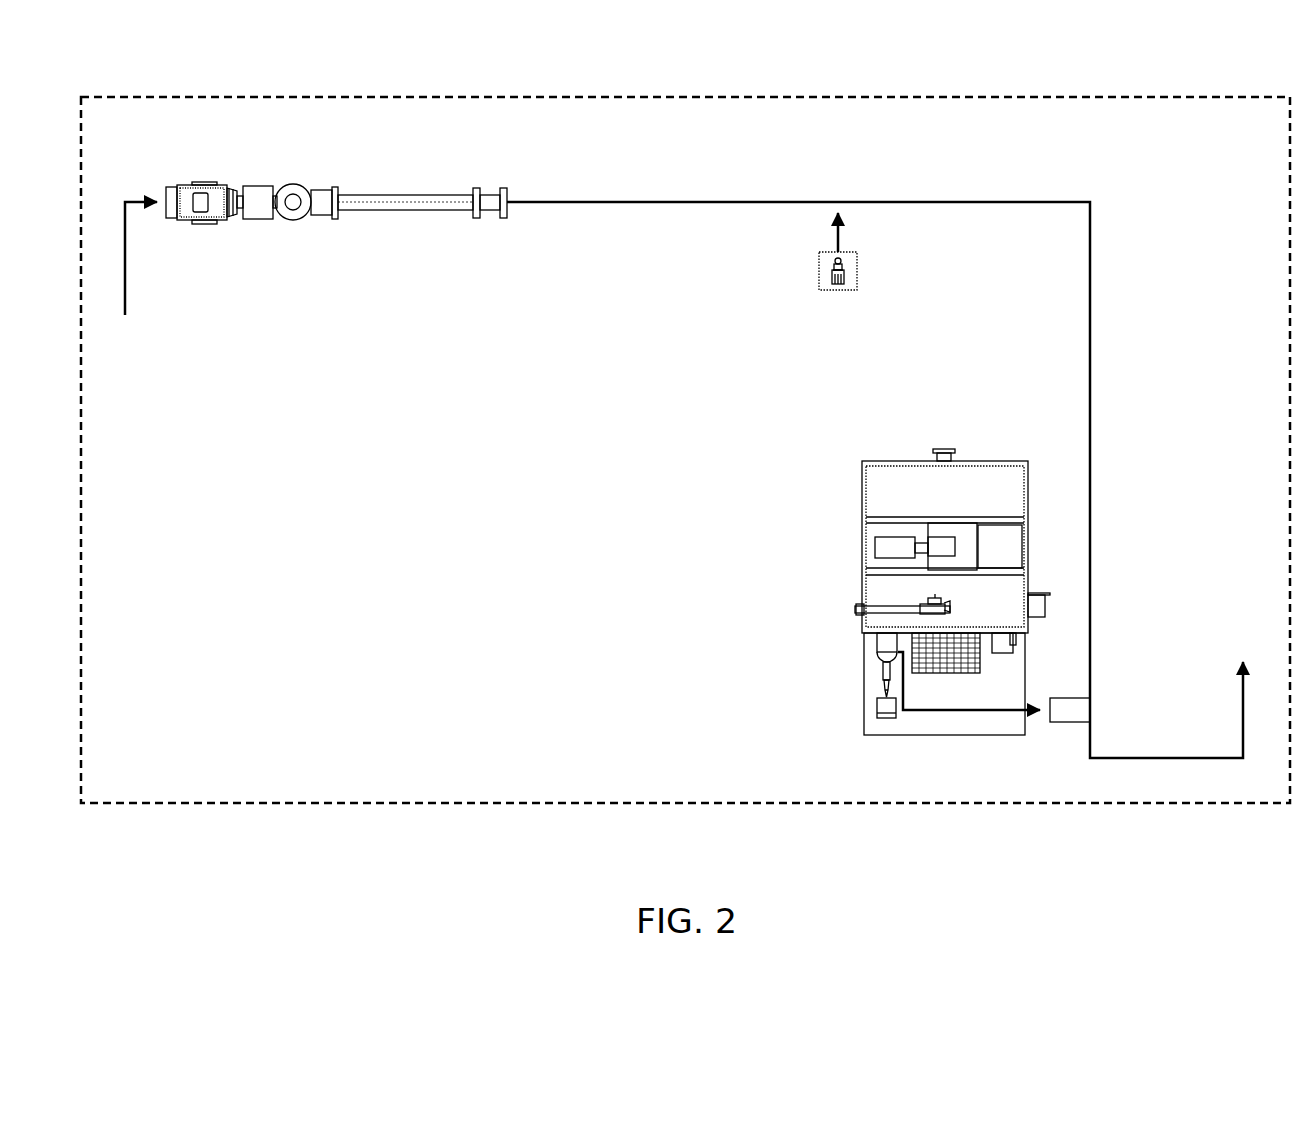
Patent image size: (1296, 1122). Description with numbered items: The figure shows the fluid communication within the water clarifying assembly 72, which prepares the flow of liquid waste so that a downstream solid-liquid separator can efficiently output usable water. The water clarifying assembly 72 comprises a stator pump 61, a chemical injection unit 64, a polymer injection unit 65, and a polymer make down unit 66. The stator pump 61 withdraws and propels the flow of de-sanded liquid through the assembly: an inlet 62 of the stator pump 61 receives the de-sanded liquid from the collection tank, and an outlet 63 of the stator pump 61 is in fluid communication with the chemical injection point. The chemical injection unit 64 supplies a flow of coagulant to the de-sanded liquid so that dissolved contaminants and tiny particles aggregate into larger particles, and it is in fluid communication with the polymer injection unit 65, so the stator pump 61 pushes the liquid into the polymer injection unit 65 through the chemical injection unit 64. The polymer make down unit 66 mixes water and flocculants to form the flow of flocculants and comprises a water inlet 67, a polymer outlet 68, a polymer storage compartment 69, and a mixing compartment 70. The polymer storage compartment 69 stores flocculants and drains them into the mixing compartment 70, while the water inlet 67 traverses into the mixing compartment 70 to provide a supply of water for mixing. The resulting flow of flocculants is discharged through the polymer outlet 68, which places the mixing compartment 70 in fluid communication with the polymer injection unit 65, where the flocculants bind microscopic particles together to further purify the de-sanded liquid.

The stator pump 61 is at (336, 197).
The inlet 62 is at (167, 222).
The outlet 63 is at (358, 212).
The chemical injection unit 64 is at (857, 278).
The polymer injection unit 65 is at (1057, 722).
The polymer make down unit 66 is at (913, 709).
The water inlet 67 is at (855, 609).
The polymer outlet 68 is at (877, 645).
The polymer storage compartment 69 is at (870, 545).
The mixing compartment 70 is at (934, 541).
The water clarifying assembly 72 is at (935, 84).